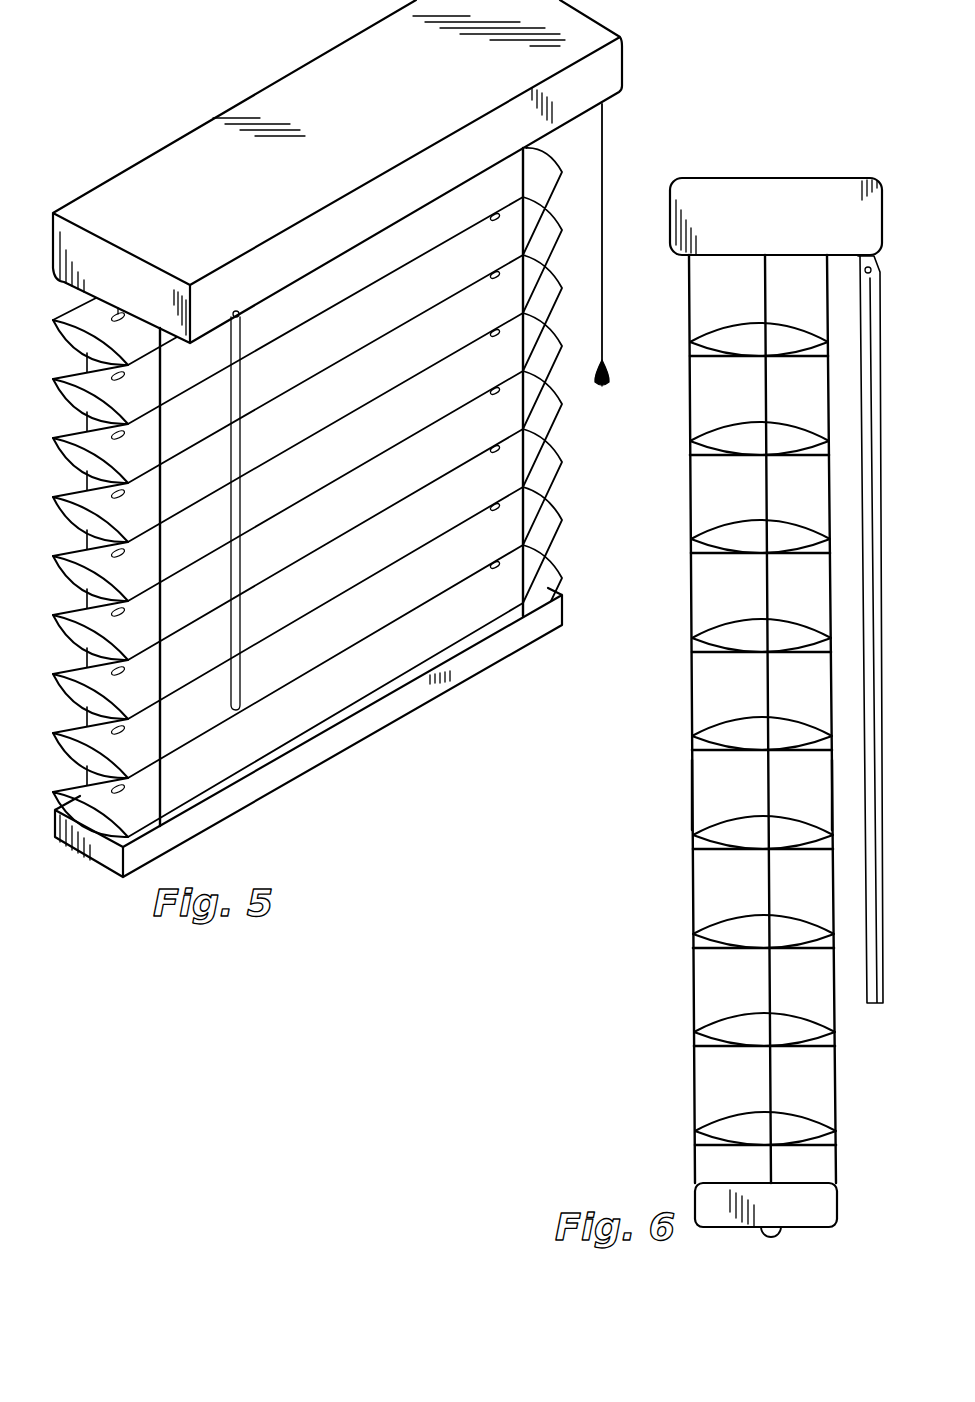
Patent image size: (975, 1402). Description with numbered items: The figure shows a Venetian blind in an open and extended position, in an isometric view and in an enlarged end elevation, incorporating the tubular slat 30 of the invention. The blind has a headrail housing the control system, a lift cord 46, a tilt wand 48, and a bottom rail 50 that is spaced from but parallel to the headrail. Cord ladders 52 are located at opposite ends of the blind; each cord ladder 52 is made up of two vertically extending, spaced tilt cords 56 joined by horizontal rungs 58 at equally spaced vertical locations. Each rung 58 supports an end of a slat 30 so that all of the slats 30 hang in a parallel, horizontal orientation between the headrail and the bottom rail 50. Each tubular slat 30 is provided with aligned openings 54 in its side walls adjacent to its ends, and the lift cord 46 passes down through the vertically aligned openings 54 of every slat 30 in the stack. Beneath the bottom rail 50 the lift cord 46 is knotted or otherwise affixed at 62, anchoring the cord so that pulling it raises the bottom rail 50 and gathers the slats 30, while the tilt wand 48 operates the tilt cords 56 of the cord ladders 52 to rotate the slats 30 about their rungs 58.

In FIG. 5, the slat 30 is at (294, 492).
In FIG. 6, the slat 30 is at (733, 1017).
In FIG. 5, the lift cord 46 is at (605, 192).
In FIG. 6, the lift cord 46 is at (765, 669).
In FIG. 5, the tilt wand 48 is at (240, 500).
In FIG. 6, the tilt wand 48 is at (868, 648).
In FIG. 5, the bottom rail 50 is at (258, 790).
In FIG. 6, the bottom rail 50 is at (713, 1200).
In FIG. 5, the cord ladder 52 is at (531, 514).
In FIG. 6, the cord ladder 52 is at (689, 560).
In FIG. 5, the aligned openings 54 is at (121, 670).
In FIG. 5, the tilt cord 56 is at (90, 442).
In FIG. 6, the tilt cord 56 is at (830, 766).
In FIG. 6, the rung 58 is at (717, 357).
In FIG. 6, the knot 62 is at (778, 1236).